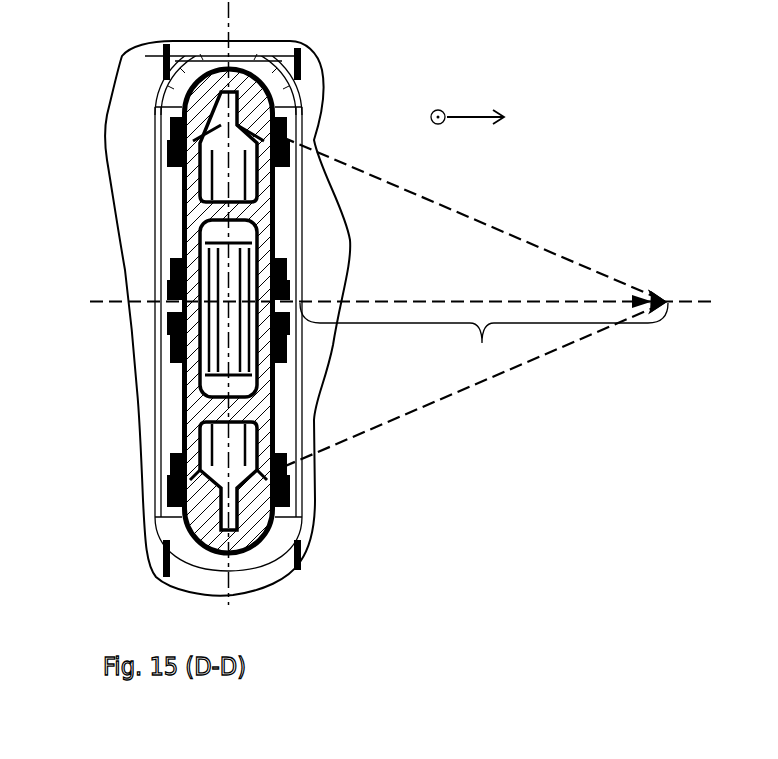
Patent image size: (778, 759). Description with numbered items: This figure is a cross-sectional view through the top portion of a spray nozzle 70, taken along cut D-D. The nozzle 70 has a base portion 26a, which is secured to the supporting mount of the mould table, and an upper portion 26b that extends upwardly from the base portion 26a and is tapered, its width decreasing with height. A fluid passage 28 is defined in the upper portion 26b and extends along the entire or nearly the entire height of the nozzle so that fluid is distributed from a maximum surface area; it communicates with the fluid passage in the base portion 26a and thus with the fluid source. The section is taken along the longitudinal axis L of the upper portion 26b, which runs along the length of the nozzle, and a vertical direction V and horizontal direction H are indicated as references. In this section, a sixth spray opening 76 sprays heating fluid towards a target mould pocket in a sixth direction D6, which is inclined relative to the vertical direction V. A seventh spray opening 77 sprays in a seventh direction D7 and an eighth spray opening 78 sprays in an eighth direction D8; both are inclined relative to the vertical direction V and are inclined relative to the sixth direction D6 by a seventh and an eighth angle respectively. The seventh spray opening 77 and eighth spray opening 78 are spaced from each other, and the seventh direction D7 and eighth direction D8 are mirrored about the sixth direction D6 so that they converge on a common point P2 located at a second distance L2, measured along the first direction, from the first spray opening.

The nozzle 70 is at (66, 76).
The base portion 26a is at (323, 265).
The upper portion 26b is at (277, 193).
The fluid passage 28 is at (223, 333).
The sixth spray opening 76 is at (303, 312).
The seventh spray opening 77 is at (262, 505).
The eighth spray opening 78 is at (266, 119).
The longitudinal axis L is at (232, 25).
The second distance L2 is at (482, 343).
The sixth direction D6 is at (600, 305).
The seventh direction D7 is at (437, 400).
The eighth direction D8 is at (560, 248).
The common point P2 is at (667, 301).
The vertical direction V is at (442, 110).
The horizontal direction H is at (487, 112).